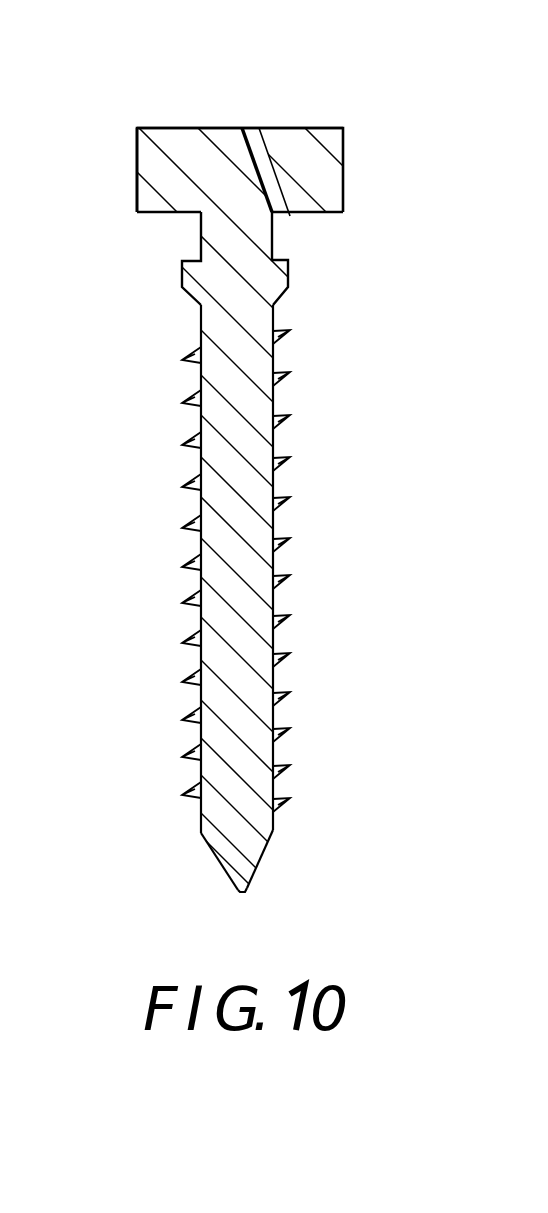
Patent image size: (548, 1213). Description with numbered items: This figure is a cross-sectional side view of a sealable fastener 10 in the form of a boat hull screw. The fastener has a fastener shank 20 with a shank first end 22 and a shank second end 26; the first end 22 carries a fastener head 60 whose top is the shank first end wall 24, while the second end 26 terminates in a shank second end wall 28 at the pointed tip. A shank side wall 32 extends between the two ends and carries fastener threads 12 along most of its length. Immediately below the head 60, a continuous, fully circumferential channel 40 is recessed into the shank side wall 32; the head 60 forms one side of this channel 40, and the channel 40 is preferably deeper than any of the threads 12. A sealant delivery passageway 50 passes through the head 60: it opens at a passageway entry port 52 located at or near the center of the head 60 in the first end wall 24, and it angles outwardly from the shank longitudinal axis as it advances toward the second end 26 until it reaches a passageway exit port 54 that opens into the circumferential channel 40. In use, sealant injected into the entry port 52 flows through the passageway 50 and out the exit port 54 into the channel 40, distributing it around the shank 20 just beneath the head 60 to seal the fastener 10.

The sealable fastener 10 is at (104, 88).
The fastener threads 12 is at (202, 560).
The fastener shank 20 is at (200, 385).
The shank first end 22 is at (137, 140).
The shank first end wall 24 is at (320, 127).
The shank second end 26 is at (201, 833).
The shank second end wall 28 is at (222, 862).
The shank side wall 32 is at (200, 665).
The circumferential channel 40 is at (200, 240).
The sealant delivery passageway 50 is at (272, 177).
The passageway entry port 52 is at (250, 128).
The passageway exit port 54 is at (288, 215).
The fastener head 60 is at (137, 183).